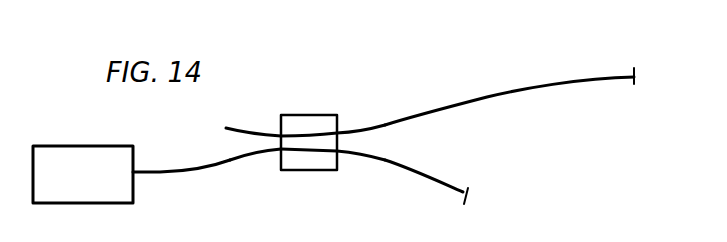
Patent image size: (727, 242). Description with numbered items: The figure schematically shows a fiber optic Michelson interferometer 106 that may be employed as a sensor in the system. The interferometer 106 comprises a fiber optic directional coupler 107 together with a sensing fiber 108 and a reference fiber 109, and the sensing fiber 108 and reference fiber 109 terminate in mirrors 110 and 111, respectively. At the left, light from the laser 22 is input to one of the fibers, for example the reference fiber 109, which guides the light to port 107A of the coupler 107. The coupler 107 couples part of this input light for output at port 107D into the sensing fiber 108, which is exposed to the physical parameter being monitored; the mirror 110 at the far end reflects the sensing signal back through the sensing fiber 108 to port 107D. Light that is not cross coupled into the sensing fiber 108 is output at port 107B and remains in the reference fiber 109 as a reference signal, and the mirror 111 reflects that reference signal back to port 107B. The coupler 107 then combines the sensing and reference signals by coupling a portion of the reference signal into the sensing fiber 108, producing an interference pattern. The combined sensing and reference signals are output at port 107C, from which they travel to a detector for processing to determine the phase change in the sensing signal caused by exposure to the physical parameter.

The laser 22 is at (99, 158).
The Michelson interferometer 106 is at (447, 78).
The fiber optic directional coupler 107 is at (308, 88).
The port 107A is at (276, 158).
The port 107B is at (342, 160).
The port 107C is at (272, 133).
The port 107D is at (340, 128).
The sensing fiber 108 is at (483, 98).
The reference fiber 109 is at (185, 172).
The mirror 110 is at (634, 84).
The mirror 111 is at (466, 196).